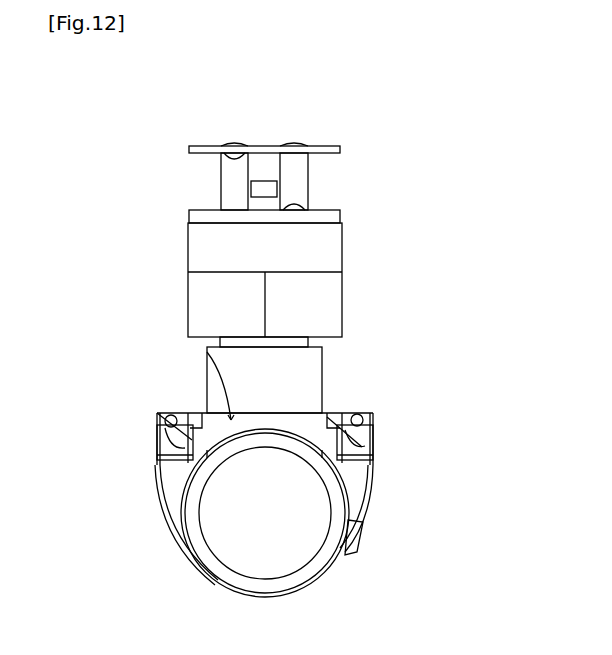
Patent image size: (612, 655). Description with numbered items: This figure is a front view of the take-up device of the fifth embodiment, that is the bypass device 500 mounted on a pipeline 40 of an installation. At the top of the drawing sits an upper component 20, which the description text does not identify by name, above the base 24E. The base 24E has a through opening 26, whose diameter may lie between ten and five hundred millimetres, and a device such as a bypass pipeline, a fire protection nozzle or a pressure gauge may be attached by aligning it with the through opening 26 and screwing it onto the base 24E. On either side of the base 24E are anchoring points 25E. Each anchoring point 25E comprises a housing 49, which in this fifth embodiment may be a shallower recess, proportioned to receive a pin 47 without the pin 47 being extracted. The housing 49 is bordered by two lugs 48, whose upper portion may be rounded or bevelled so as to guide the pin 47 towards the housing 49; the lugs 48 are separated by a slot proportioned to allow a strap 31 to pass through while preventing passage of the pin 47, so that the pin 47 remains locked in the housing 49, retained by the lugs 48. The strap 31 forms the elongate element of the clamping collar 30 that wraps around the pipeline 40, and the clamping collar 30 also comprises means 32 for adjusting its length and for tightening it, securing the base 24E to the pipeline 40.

The bypass device 500 is at (290, 115).
The actuator body 20 is at (333, 266).
The base 24E is at (207, 350).
The anchoring point 25E is at (191, 398).
The through opening 26 is at (310, 372).
The pin 47 is at (362, 414).
The lug 48 is at (375, 430).
The housing 49 is at (372, 415).
The clamping collar 30 is at (185, 558).
The strap 31 is at (167, 520).
The means for adjusting the length and for tightening the clamping collar 32 is at (363, 532).
The pipeline 40 is at (270, 570).